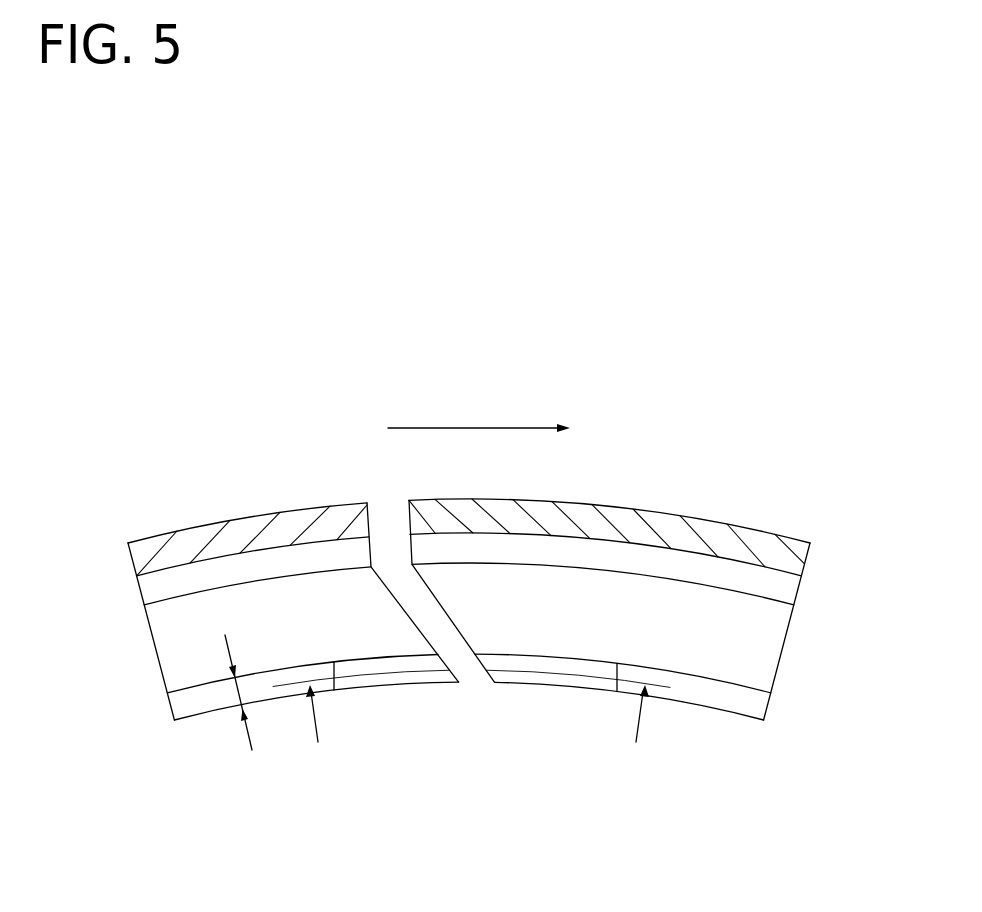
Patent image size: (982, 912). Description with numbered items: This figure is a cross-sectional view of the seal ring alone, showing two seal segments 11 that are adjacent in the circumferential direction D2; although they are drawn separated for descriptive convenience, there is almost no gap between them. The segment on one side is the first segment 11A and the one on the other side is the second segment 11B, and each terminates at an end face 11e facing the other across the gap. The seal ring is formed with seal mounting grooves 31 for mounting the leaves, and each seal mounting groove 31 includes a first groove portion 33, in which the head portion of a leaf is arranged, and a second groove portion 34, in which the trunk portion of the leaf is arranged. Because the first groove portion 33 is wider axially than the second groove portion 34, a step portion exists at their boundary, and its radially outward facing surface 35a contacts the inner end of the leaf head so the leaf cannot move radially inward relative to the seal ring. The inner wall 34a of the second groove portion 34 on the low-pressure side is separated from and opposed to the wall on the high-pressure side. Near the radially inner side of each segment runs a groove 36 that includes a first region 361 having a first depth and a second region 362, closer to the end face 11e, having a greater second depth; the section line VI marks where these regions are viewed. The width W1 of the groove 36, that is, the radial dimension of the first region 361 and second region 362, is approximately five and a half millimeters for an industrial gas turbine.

The first segment 11A is at (164, 524).
The second segment 11B is at (718, 502).
The seal segment 11 is at (468, 701).
The end face 11e is at (390, 587).
The first groove portion 33 is at (241, 565).
The seal mounting groove 31 is at (469, 554).
The surface of the step portion 35a is at (163, 601).
The second groove portion 34 is at (167, 652).
The inner wall of the second groove portion 34a is at (348, 623).
The groove 36 is at (475, 677).
The first region 361 is at (208, 705).
The second region 362 is at (408, 676).
The width of the groove W1 is at (242, 692).
The view VI is at (477, 727).
The circumferential direction D2 is at (479, 418).